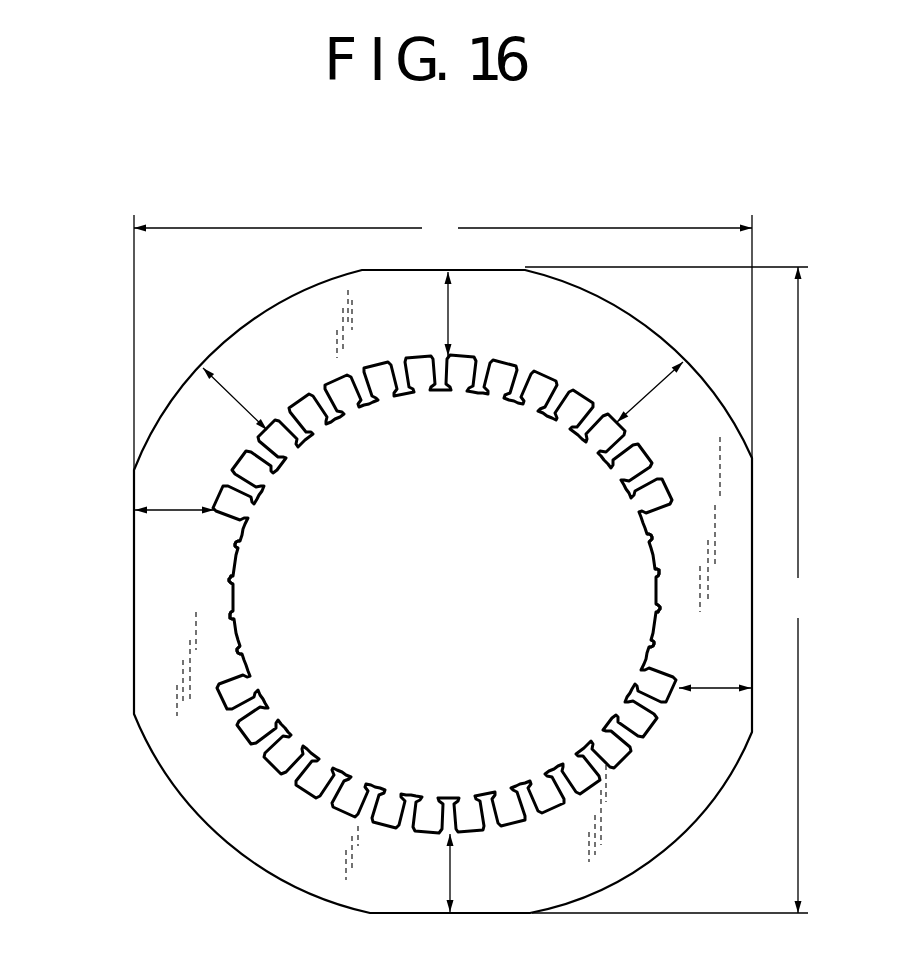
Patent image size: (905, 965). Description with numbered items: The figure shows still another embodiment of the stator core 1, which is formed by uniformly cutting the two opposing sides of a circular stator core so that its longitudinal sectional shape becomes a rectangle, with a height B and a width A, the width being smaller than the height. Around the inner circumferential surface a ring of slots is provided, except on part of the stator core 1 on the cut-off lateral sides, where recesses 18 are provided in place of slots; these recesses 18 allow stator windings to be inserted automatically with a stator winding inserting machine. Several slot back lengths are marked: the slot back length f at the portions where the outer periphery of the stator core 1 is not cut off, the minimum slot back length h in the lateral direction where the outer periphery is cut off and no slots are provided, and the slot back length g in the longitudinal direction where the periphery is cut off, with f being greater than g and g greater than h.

The stator core 1 is at (294, 361).
The recess 18 is at (230, 583).
The width of the stator core A is at (443, 342).
The height of the stator core B is at (667, 590).
The slot back length at uncut portions f is at (443, 396).
The slot back length in the longitudinal direction g is at (459, 592).
The minimum slot back length in the lateral direction h is at (443, 587).